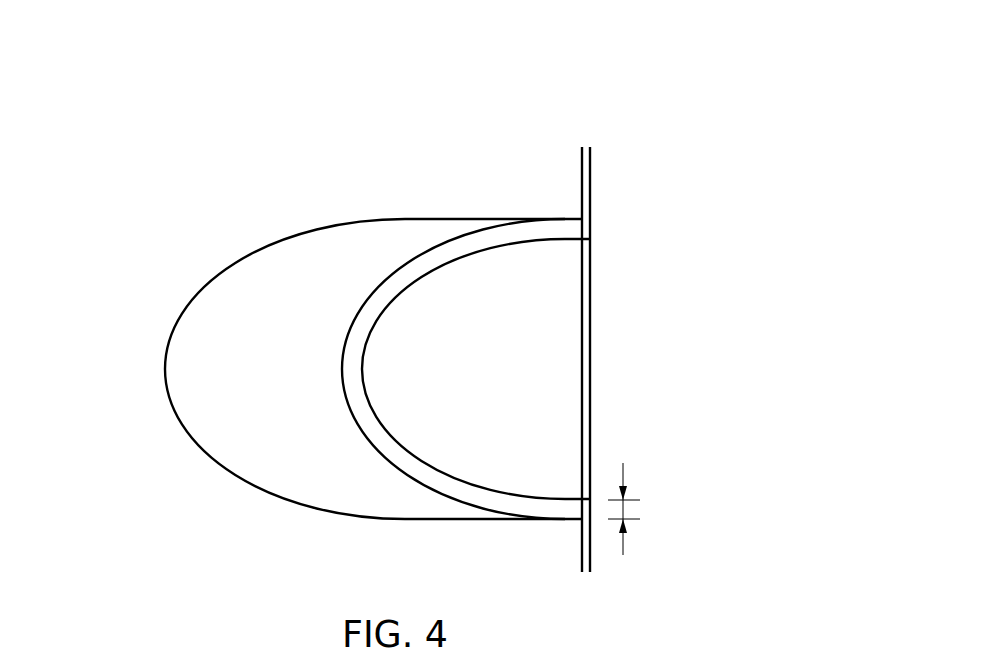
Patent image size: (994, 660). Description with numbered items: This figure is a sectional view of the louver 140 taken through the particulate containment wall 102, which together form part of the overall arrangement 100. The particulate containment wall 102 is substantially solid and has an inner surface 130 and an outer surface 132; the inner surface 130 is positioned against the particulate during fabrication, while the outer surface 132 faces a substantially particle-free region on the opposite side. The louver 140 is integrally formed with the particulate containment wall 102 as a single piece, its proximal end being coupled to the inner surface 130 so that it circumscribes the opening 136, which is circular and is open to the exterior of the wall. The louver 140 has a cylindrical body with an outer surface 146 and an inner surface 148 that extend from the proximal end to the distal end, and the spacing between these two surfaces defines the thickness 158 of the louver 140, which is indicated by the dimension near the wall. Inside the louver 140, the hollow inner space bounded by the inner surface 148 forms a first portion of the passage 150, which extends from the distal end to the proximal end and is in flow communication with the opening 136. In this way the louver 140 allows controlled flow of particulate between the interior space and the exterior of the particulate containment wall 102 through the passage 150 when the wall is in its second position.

The assembly 100 is at (742, 73).
The particulate containment wall 102 is at (596, 326).
The inner surface 130 is at (581, 176).
The outer surface 132 is at (592, 202).
The opening 136 is at (592, 328).
The louver 140 is at (375, 327).
The outer surface 146 is at (356, 242).
The inner surface 148 is at (480, 248).
The passage 150 is at (540, 391).
The thickness 158 is at (624, 510).